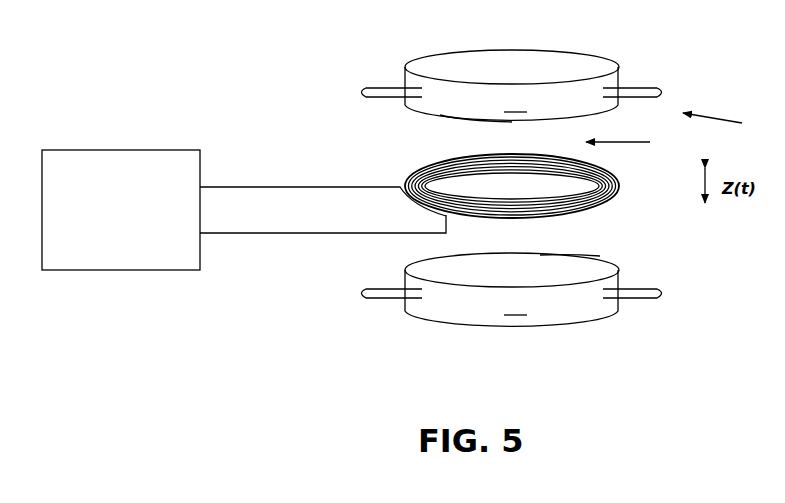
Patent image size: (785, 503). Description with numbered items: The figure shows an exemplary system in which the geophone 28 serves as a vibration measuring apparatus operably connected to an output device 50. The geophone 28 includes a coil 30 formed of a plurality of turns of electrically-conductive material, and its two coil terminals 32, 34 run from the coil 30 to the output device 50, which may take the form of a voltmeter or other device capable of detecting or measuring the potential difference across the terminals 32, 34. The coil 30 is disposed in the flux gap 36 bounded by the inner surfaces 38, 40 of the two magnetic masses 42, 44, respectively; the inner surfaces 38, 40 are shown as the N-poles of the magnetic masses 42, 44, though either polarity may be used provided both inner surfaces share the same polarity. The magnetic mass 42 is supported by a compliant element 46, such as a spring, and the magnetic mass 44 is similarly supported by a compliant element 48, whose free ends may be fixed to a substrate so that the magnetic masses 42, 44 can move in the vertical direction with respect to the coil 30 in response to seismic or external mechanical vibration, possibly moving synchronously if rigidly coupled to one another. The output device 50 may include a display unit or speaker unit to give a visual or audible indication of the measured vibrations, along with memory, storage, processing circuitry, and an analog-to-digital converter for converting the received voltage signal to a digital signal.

The geophone 28 is at (727, 127).
The coil 30 is at (620, 186).
The coil terminal 32 is at (293, 186).
The coil terminal 34 is at (293, 232).
The flux gap 36 is at (634, 144).
The inner surface 38 is at (466, 123).
The inner surface 40 is at (560, 268).
The magnetic mass 42 is at (512, 87).
The magnetic mass 44 is at (512, 290).
The compliant element 46 is at (633, 92).
The compliant element 48 is at (638, 292).
The output device 50 is at (142, 149).